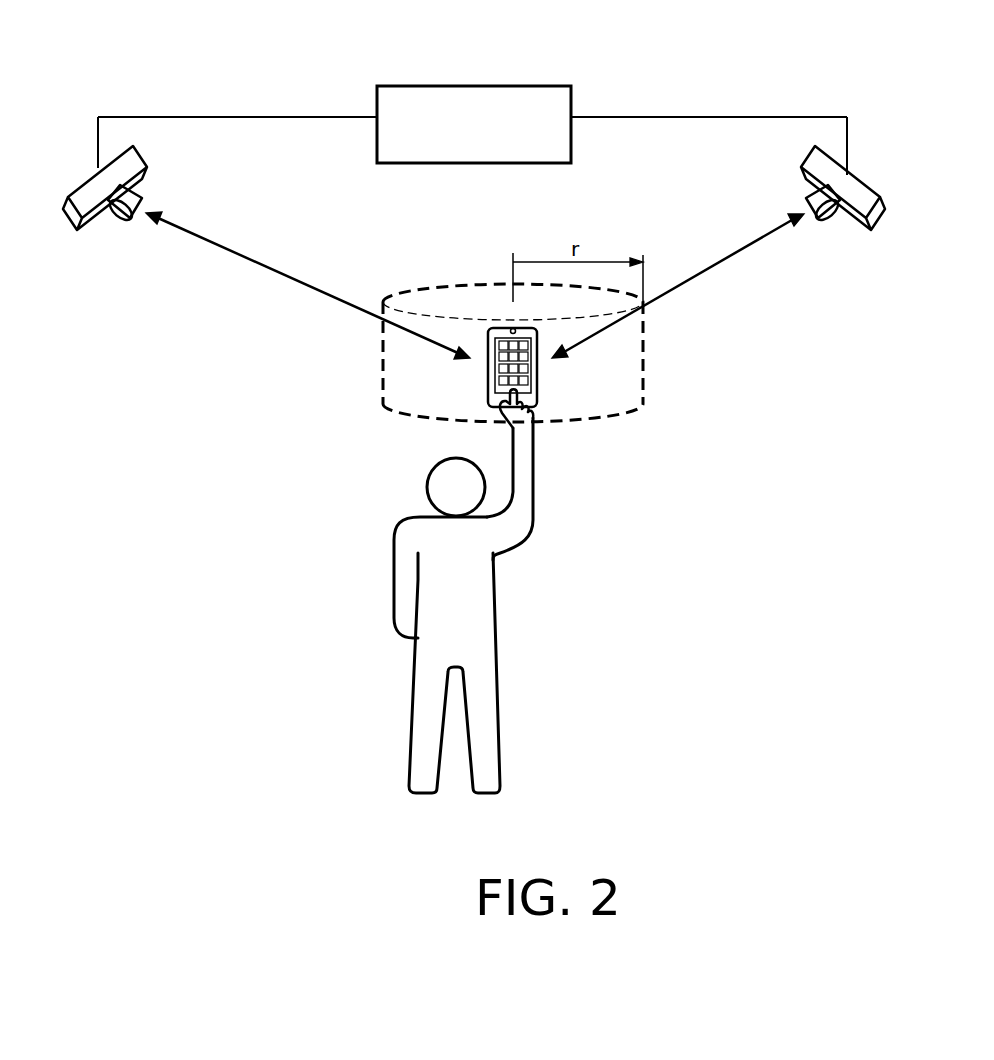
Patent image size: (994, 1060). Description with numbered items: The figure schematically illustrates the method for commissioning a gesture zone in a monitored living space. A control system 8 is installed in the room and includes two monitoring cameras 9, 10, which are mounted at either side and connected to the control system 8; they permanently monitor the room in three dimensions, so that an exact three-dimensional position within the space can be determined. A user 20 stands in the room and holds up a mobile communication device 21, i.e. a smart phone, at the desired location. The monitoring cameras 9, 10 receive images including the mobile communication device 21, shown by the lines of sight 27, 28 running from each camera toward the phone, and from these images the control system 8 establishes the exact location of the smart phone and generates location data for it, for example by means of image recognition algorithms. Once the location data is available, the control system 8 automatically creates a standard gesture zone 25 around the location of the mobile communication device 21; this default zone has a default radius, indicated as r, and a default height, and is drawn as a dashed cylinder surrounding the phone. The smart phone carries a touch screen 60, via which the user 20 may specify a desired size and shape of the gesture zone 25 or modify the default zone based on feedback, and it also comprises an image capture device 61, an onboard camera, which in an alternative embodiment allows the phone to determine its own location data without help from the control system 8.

The control system 8 is at (475, 86).
The monitoring camera 9 is at (148, 173).
The monitoring camera 10 is at (800, 176).
The user 20 is at (494, 596).
The mobile communication device 21 is at (519, 324).
The gesture zone 25 is at (646, 385).
The line of sight of second camera 27 is at (677, 289).
The line of sight of first camera 28 is at (308, 290).
The touch screen 60 is at (503, 392).
The image capture device 61 is at (513, 328).